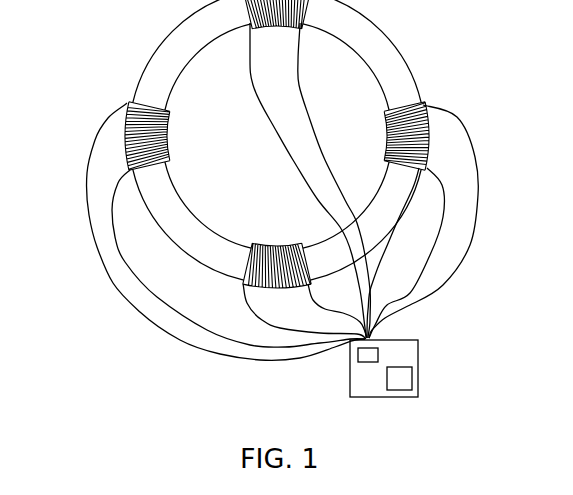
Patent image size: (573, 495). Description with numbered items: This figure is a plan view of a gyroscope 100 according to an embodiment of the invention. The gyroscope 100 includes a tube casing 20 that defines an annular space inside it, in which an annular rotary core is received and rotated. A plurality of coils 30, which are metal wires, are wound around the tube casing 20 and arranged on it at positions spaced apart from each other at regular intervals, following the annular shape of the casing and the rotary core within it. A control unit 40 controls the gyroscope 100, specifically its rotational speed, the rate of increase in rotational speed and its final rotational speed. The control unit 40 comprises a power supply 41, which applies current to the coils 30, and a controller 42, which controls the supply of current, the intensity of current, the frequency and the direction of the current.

The gyroscope 100 is at (122, 39).
The tube casing 20 is at (383, 47).
The coils 30 is at (399, 105).
The control unit 40 is at (419, 357).
The power supply 41 is at (379, 355).
The controller 42 is at (413, 378).